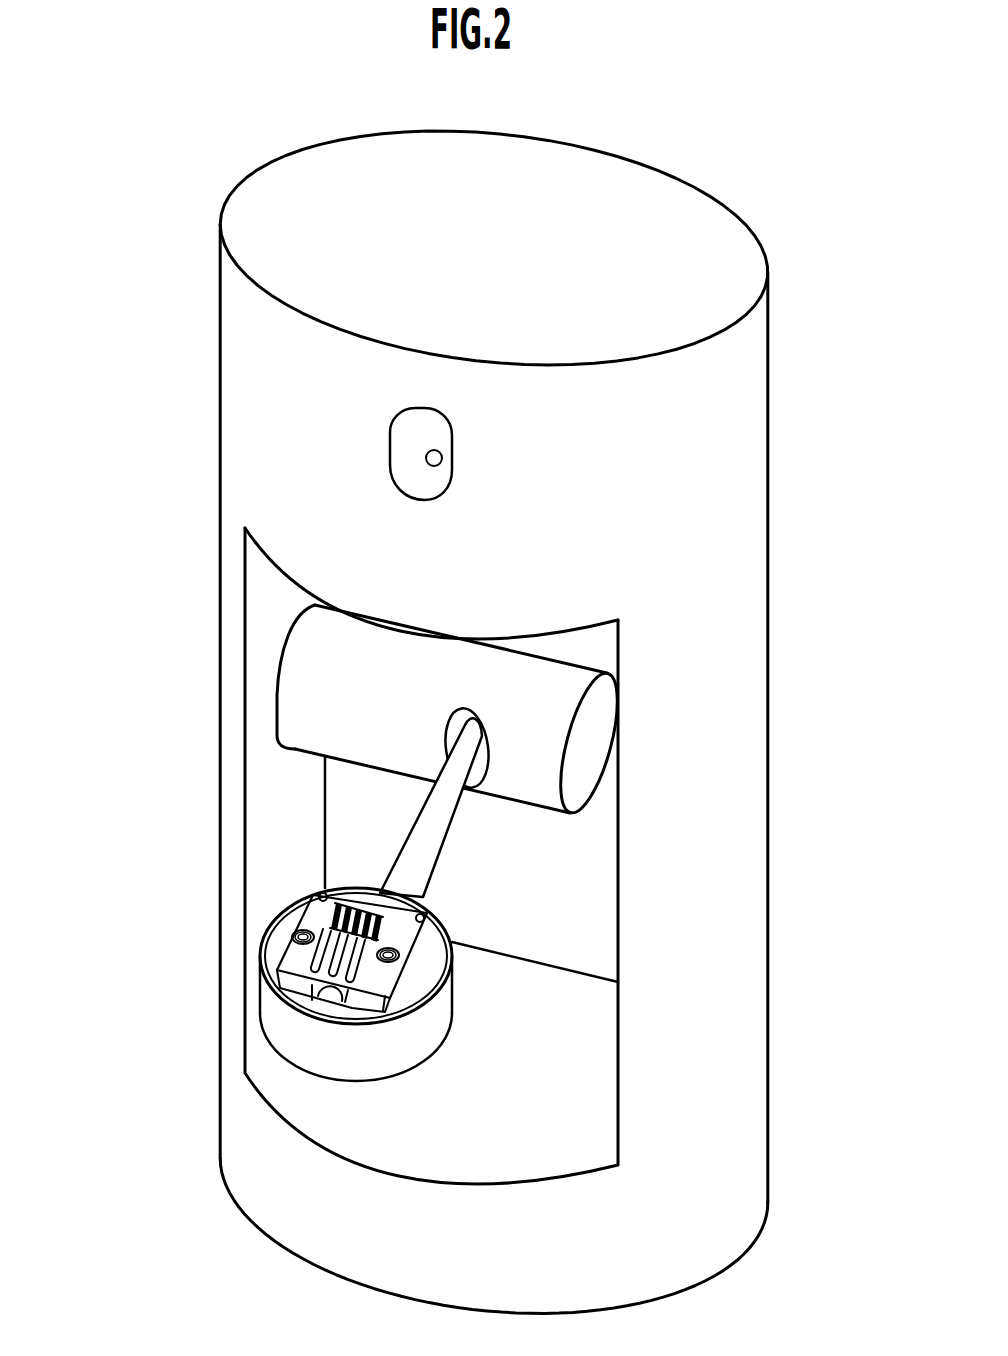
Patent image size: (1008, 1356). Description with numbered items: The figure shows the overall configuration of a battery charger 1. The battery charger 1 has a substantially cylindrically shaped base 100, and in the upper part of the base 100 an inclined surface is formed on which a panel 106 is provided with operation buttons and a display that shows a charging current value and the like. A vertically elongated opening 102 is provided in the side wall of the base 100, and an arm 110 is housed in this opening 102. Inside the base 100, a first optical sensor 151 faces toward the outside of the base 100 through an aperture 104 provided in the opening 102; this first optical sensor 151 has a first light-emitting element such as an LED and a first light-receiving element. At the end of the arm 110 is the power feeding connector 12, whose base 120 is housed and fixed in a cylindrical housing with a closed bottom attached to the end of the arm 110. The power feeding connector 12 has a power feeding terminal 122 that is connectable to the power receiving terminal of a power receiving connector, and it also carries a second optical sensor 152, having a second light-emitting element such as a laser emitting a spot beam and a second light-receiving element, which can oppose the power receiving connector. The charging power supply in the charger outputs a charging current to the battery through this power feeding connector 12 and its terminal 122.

The battery charger 1 is at (158, 183).
The base 100 is at (762, 592).
The panel 106 is at (672, 227).
The aperture 104 is at (390, 427).
The first optical sensor 151 is at (442, 458).
The opening 102 is at (263, 771).
The arm 110 is at (408, 837).
The base 120 is at (398, 1065).
The power feeding connector 12 is at (263, 912).
The second optical sensor 152 is at (320, 893).
The power feeding terminal 122 is at (300, 947).